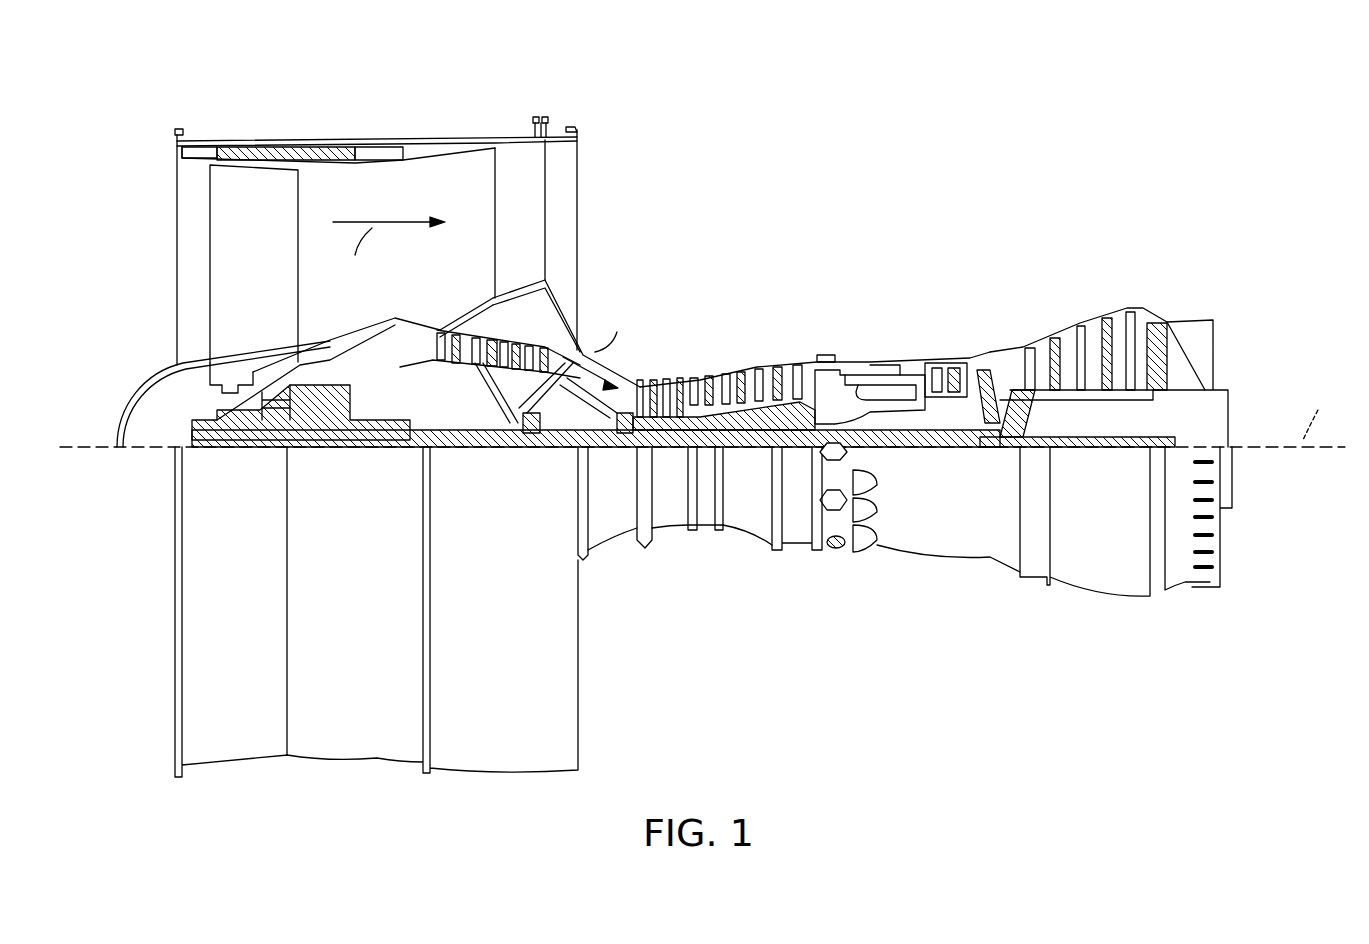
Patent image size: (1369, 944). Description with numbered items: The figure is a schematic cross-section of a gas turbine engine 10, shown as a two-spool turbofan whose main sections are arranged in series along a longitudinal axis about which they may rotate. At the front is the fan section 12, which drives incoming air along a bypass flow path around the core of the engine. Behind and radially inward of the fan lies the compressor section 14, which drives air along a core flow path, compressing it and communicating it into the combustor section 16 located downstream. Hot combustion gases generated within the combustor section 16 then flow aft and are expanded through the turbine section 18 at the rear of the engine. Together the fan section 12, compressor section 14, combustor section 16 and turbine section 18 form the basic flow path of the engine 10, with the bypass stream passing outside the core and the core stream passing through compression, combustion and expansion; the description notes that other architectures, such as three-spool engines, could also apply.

The gas turbine engine 10 is at (888, 190).
The fan section 12 is at (298, 118).
The compressor section 14 is at (643, 335).
The combustor section 16 is at (885, 320).
The turbine section 18 is at (1052, 280).